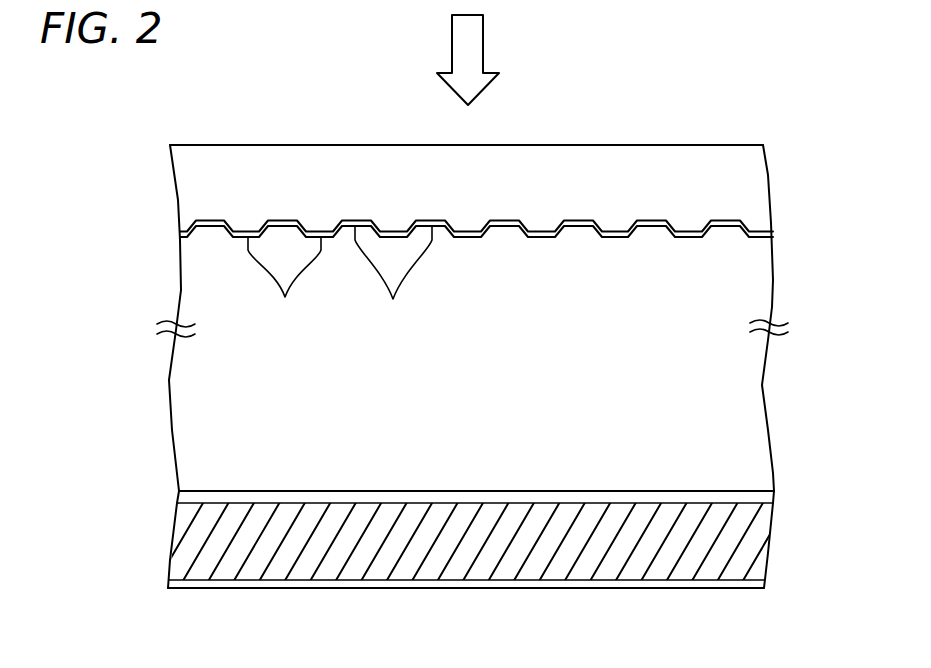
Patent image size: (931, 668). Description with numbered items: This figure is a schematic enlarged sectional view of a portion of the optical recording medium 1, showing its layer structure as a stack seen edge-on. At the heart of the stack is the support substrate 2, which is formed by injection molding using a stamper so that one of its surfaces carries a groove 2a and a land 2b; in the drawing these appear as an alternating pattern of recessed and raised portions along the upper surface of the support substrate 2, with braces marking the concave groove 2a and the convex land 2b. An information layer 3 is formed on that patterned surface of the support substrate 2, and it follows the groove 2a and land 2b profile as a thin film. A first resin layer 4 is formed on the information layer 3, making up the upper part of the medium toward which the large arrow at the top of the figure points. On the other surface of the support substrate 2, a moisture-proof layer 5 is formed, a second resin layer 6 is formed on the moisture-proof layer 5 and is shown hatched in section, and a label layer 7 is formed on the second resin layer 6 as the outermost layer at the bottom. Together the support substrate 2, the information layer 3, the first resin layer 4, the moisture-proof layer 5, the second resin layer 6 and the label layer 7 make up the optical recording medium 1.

The optical recording medium 1 is at (712, 105).
The support substrate 2 is at (747, 292).
The groove 2a is at (393, 279).
The land 2b is at (284, 285).
The information layer 3 is at (758, 233).
The first resin layer 4 is at (747, 175).
The moisture-proof layer 5 is at (757, 497).
The second resin layer 6 is at (748, 555).
The label layer 7 is at (746, 585).